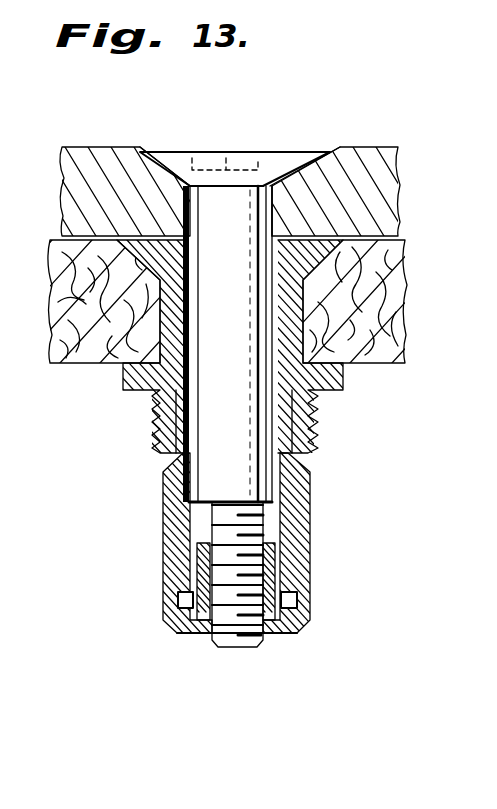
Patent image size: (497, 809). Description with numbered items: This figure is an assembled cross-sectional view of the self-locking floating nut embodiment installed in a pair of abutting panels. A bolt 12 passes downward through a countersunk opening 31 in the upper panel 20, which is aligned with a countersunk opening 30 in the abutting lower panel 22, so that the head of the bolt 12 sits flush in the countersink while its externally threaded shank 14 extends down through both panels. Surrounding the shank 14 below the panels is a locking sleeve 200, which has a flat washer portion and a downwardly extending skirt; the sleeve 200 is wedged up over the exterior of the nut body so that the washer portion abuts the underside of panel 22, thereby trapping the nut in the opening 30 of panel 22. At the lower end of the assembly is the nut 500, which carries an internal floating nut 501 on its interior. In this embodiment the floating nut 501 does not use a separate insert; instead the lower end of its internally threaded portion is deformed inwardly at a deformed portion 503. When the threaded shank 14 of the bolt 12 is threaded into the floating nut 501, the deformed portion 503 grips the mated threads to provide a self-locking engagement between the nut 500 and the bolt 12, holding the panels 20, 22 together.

The bolt 12 is at (290, 140).
The externally threaded shank 14 is at (227, 530).
The panel 20 is at (90, 167).
The panel 22 is at (86, 340).
The countersunk opening 30 is at (333, 240).
The countersunk opening 31 is at (193, 163).
The locking sleeve 200 is at (323, 417).
The nut 500 is at (158, 608).
The internal floating nut 501 is at (290, 540).
The deformed portion 503 is at (283, 637).